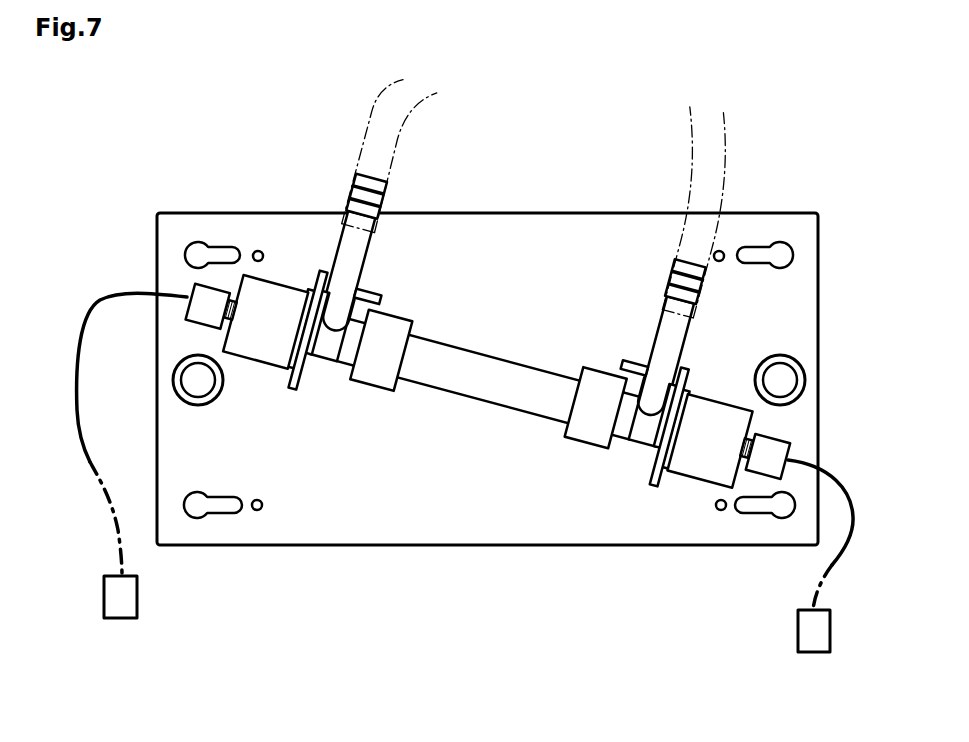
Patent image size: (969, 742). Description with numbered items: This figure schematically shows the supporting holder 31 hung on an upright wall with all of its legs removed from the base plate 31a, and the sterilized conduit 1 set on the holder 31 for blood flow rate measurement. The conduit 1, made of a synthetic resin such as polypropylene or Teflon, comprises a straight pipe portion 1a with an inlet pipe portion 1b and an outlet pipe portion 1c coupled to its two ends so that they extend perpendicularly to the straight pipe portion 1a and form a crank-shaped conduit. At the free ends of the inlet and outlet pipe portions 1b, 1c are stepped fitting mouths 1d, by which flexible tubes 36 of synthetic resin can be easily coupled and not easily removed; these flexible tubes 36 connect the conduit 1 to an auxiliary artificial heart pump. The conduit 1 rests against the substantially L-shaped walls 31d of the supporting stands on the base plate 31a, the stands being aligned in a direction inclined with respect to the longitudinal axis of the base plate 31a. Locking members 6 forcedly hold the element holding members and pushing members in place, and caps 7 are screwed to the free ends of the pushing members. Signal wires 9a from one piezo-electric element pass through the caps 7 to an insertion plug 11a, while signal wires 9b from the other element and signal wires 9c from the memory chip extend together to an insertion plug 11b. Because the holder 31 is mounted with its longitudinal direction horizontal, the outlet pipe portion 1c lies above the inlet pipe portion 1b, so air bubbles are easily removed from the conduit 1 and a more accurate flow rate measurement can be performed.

The conduit 1 is at (482, 342).
The straight pipe portion 1a is at (532, 382).
The inlet pipe portion 1b is at (690, 337).
The outlet pipe portion 1c is at (337, 248).
The fitting mouth 1d is at (357, 192).
The locking member 6 is at (253, 283).
The cap 7 is at (203, 292).
The signal wire 9a is at (853, 522).
The signal wire 9b is at (119, 401).
The signal wire 9c is at (93, 310).
The insertion plug 11a is at (813, 645).
The insertion plug 11b is at (120, 610).
The holder 31 is at (507, 558).
The base plate 31a is at (416, 525).
The wall 31d is at (289, 395).
The flexible tube 36 is at (378, 102).